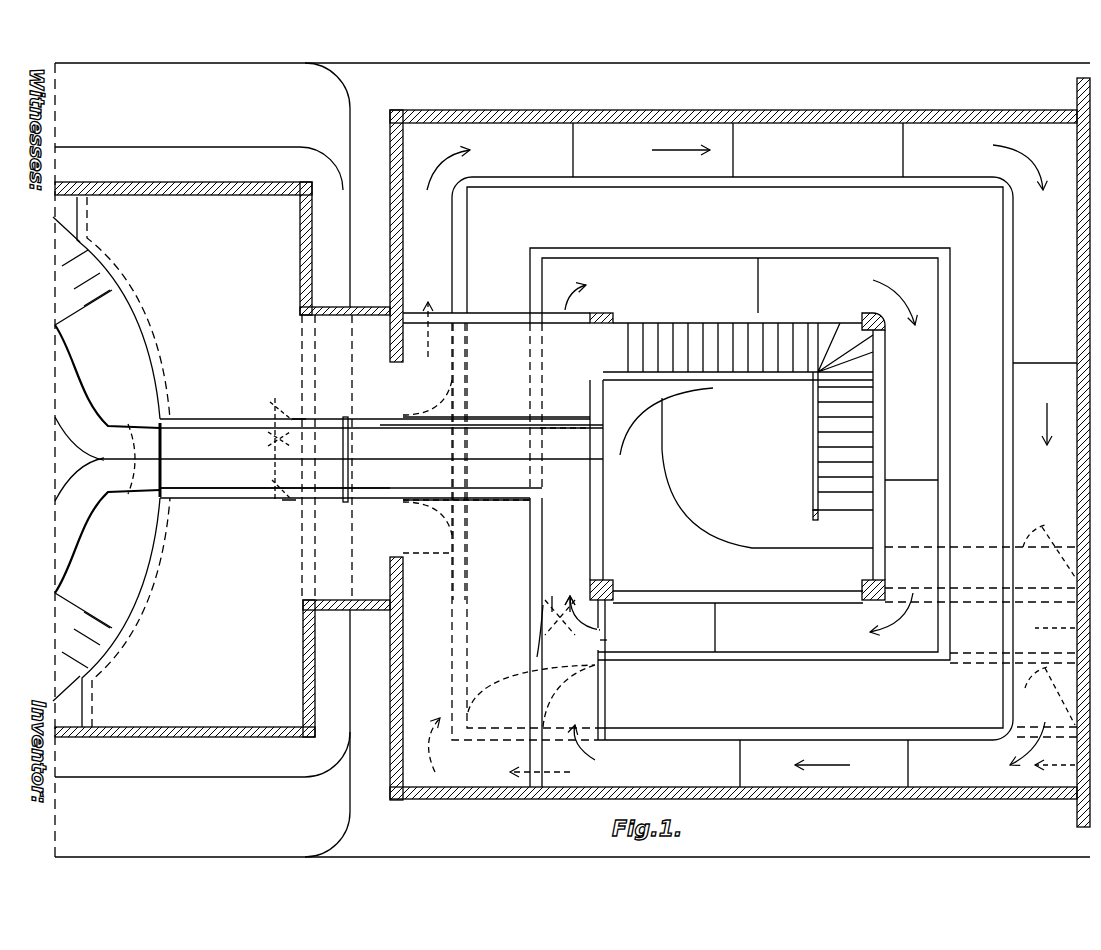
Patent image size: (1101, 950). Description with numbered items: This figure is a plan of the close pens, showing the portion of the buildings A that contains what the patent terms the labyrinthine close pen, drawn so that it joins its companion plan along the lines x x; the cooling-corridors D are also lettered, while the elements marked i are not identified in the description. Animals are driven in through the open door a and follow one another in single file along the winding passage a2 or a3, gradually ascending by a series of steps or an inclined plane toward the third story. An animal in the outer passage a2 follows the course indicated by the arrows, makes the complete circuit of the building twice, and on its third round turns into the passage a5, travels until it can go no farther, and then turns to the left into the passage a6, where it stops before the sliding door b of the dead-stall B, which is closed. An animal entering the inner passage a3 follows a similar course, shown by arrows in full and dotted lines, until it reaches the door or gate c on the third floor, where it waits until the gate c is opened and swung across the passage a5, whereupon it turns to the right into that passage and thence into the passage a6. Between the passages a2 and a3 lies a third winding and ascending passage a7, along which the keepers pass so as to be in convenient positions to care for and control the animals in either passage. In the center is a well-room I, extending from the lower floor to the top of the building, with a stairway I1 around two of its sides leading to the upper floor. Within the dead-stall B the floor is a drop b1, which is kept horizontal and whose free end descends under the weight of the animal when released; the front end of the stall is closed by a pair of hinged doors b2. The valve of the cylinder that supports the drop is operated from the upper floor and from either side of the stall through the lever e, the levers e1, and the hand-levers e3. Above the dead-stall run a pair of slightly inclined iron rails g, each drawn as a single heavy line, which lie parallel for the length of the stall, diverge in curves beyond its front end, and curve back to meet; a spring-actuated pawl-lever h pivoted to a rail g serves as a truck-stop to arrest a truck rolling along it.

The close-pen building portion A is at (740, 452).
The cooling-corridors D is at (733, 454).
The exhaust pipes i is at (572, 447).
The coincidence line x x is at (51, 456).
The open door a is at (1055, 645).
The outer winding passage a2 is at (749, 455).
The inner winding passage a3 is at (803, 517).
The connecting passage a5 is at (514, 649).
The approach passage a6 is at (491, 456).
The keepers' passage a7 is at (764, 458).
The dead-stall B is at (381, 458).
The sliding door b is at (335, 457).
The drop b1 is at (275, 480).
The hinged doors b2 is at (143, 459).
The inclined iron rails g is at (353, 459).
The spring-actuated pawl-lever h is at (107, 459).
The lever e is at (272, 449).
The levers e1 is at (283, 443).
The hand-levers e3 is at (300, 463).
The gate c is at (607, 639).
The well-room I is at (833, 458).
The stairway I1 is at (743, 421).